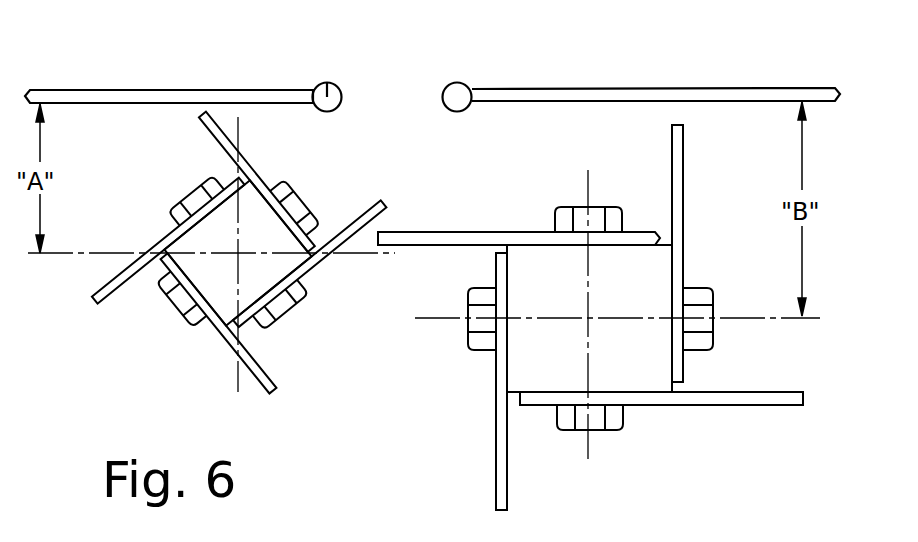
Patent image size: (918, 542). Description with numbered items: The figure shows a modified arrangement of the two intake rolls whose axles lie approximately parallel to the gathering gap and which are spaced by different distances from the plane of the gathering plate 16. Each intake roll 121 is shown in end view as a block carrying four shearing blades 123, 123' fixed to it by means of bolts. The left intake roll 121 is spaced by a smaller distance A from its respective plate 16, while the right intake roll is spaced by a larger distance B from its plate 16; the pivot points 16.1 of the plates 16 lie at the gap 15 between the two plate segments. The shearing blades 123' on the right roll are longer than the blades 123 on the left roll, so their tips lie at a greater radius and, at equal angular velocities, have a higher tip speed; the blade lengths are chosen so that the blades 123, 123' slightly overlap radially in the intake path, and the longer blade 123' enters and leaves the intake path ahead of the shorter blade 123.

The gap between bar segments 15 is at (402, 82).
The gathering plate 16 is at (92, 91).
The pivot 16.1 is at (327, 85).
The intake roll 121 is at (220, 280).
The shearing blade 123 is at (239, 251).
The shearing blade 123' is at (590, 317).